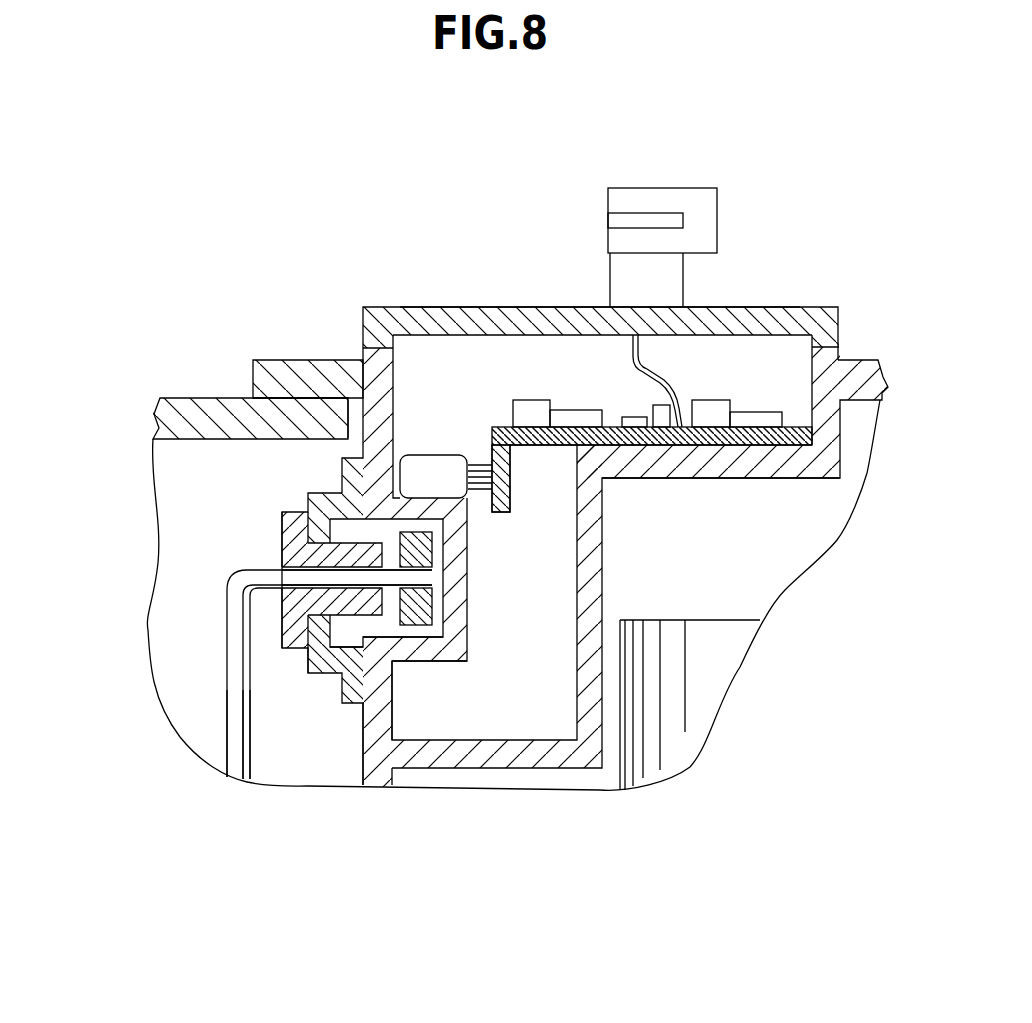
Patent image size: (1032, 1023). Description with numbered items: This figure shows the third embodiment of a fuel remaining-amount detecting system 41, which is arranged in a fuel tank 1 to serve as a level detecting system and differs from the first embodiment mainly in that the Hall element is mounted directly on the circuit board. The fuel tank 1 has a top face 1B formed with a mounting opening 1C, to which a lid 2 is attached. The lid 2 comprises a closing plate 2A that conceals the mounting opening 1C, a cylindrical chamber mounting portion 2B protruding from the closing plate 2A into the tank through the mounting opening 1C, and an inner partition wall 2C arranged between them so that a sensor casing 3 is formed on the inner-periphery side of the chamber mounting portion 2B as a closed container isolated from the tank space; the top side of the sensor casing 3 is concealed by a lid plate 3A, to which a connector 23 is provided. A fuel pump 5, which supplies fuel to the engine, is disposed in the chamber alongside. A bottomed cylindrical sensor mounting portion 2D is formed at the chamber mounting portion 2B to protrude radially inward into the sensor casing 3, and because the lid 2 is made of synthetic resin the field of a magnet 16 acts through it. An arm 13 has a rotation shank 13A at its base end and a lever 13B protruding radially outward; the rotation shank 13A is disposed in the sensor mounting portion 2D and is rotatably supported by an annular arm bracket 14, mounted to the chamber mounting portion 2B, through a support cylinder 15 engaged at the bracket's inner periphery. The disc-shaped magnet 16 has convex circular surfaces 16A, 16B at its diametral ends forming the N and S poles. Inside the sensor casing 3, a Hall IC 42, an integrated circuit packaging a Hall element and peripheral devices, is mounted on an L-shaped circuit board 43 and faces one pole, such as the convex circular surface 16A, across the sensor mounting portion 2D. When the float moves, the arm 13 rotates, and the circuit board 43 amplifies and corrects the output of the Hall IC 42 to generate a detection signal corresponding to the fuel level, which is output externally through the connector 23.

The fuel tank 1 is at (220, 423).
The top face 1B is at (302, 420).
The mounting opening 1C is at (348, 420).
The lid 2 is at (857, 377).
The closing plate 2A is at (277, 387).
The chamber mounting portion 2B is at (380, 765).
The inner partition wall 2C is at (768, 462).
The sensor mounting portion 2D is at (455, 653).
The sensor casing 3 is at (590, 663).
The lid plate 3A is at (785, 320).
The fuel pump 5 is at (672, 713).
The arm 13 is at (237, 620).
The rotation shank 13A is at (272, 578).
The lever 13B is at (235, 707).
The arm bracket 14 is at (327, 660).
The support cylinder 15 is at (295, 635).
The magnet 16 is at (417, 603).
The convex circular surface 16A is at (417, 528).
The convex circular surface 16B is at (417, 628).
The connector 23 is at (697, 213).
The fuel remaining-amount detecting system 41 is at (493, 297).
The Hall IC 42 is at (432, 472).
The circuit board 43 is at (580, 437).